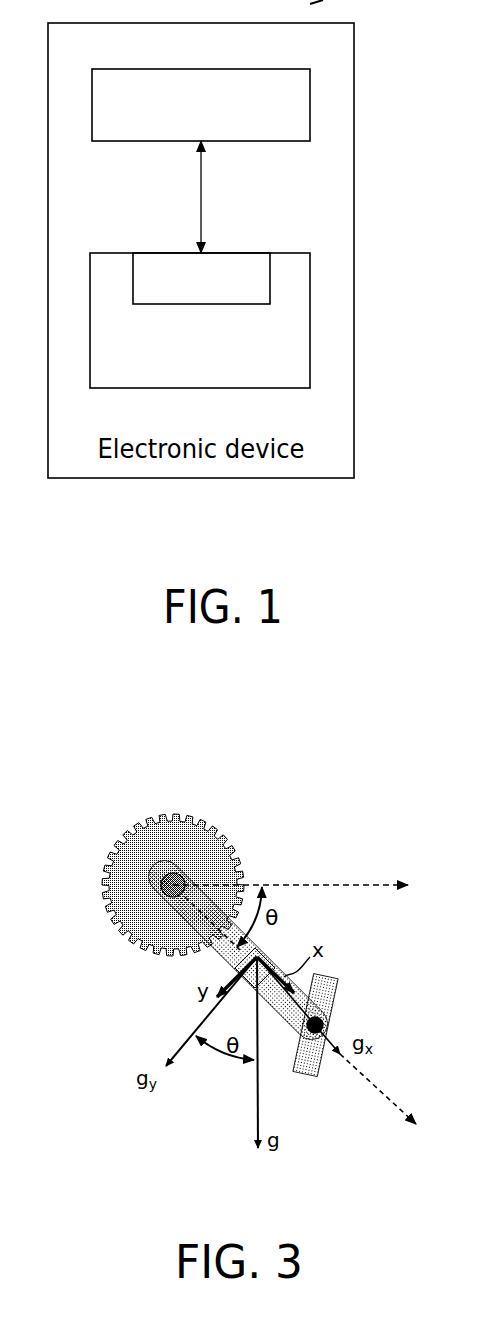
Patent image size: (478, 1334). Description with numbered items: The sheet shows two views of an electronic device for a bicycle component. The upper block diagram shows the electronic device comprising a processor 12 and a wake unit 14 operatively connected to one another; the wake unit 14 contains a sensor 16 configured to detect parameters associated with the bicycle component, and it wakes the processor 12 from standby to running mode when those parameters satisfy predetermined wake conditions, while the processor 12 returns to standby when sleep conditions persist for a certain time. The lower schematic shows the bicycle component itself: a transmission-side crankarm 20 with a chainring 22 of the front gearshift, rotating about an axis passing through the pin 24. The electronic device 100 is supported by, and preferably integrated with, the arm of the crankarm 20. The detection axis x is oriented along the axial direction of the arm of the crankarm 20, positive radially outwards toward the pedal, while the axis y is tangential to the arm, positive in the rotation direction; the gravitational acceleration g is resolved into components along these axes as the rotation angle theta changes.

In FIG. 1, the processor 12 is at (310, 108).
In FIG. 1, the wake unit 14 is at (310, 351).
In FIG. 1, the sensor 16 is at (270, 279).
In FIG. 3, the crankarm 20 is at (200, 936).
In FIG. 3, the chainring 22 is at (146, 836).
In FIG. 3, the pin 24 is at (170, 882).
In FIG. 3, the electronic device 100 is at (292, 942).